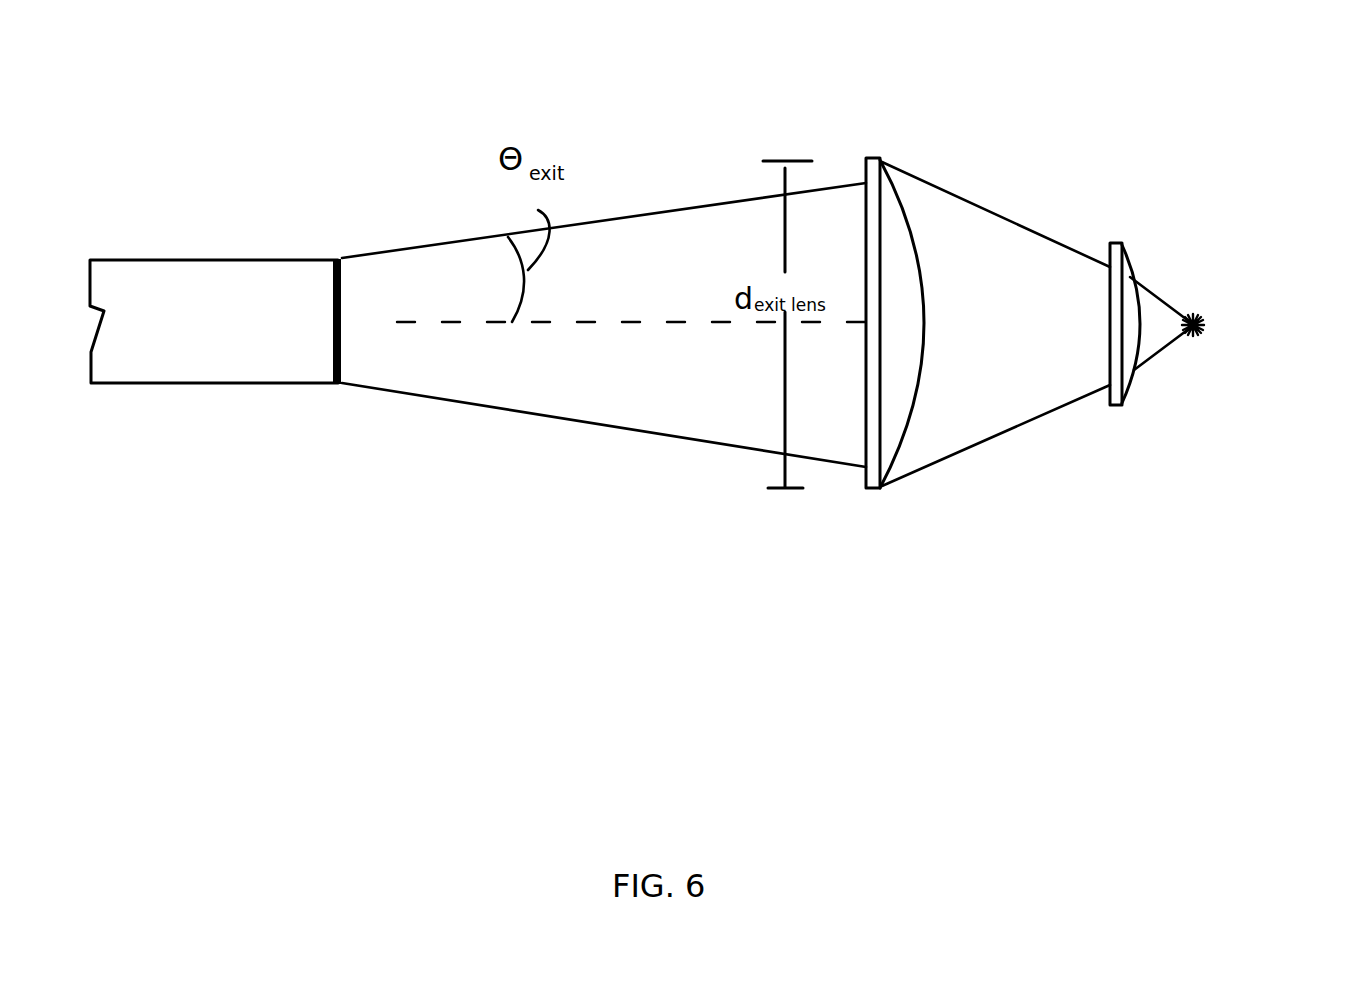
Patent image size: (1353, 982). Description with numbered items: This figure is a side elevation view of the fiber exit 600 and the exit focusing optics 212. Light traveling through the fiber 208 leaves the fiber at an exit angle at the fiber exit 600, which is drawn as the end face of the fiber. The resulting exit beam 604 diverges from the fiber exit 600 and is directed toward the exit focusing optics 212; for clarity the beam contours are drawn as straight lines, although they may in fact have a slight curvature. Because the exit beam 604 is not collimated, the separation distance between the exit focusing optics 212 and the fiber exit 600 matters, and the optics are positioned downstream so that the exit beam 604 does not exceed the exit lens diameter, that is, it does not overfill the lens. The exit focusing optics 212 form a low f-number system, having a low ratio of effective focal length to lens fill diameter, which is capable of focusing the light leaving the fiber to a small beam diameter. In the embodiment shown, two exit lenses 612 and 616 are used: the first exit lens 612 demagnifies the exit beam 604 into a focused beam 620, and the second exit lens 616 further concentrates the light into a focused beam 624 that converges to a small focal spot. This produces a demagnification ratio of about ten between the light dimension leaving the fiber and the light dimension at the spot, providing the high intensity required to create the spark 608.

The fiber 208 is at (193, 258).
The fiber exit 600 is at (342, 362).
The exit beam 604 is at (657, 187).
The exit focusing optics 212 is at (882, 261).
The exit lens 612 is at (872, 157).
The focused beam 620 is at (1000, 226).
The exit lens 616 is at (1115, 242).
The focused beam 624 is at (1153, 286).
The spark 608 is at (1203, 317).